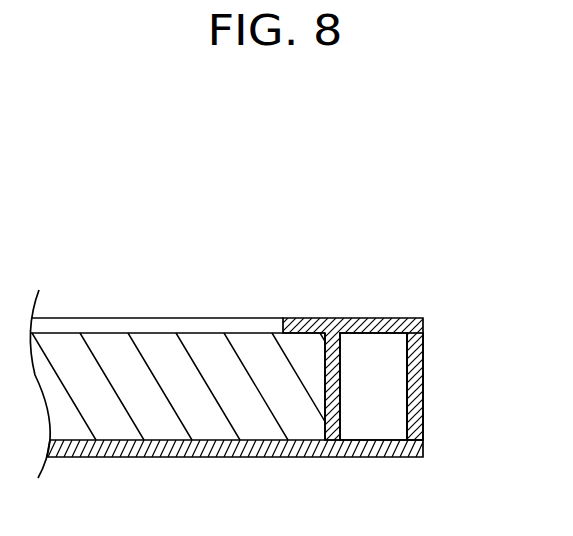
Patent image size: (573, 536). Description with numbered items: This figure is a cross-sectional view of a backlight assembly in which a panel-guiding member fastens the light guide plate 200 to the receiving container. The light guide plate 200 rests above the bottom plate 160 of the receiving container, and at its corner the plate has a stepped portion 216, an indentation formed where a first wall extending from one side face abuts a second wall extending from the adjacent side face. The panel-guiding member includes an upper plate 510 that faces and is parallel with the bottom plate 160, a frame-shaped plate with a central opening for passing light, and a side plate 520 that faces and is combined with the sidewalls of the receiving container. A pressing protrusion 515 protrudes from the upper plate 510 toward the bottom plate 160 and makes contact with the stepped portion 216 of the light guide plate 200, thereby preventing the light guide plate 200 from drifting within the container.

The light guide plate 200 is at (223, 348).
The stepped portion 216 is at (323, 391).
The upper plate 510 is at (385, 317).
The pressing protrusion 515 is at (338, 353).
The side plate 520 is at (415, 400).
The bottom plate 160 is at (420, 446).